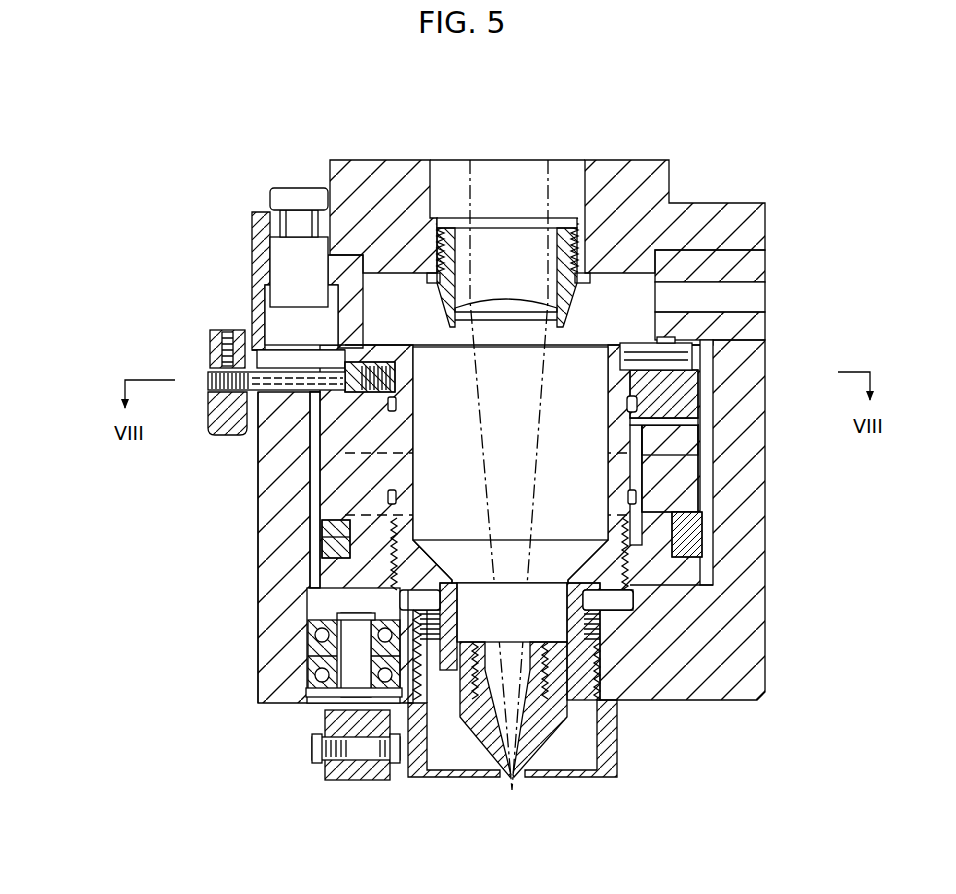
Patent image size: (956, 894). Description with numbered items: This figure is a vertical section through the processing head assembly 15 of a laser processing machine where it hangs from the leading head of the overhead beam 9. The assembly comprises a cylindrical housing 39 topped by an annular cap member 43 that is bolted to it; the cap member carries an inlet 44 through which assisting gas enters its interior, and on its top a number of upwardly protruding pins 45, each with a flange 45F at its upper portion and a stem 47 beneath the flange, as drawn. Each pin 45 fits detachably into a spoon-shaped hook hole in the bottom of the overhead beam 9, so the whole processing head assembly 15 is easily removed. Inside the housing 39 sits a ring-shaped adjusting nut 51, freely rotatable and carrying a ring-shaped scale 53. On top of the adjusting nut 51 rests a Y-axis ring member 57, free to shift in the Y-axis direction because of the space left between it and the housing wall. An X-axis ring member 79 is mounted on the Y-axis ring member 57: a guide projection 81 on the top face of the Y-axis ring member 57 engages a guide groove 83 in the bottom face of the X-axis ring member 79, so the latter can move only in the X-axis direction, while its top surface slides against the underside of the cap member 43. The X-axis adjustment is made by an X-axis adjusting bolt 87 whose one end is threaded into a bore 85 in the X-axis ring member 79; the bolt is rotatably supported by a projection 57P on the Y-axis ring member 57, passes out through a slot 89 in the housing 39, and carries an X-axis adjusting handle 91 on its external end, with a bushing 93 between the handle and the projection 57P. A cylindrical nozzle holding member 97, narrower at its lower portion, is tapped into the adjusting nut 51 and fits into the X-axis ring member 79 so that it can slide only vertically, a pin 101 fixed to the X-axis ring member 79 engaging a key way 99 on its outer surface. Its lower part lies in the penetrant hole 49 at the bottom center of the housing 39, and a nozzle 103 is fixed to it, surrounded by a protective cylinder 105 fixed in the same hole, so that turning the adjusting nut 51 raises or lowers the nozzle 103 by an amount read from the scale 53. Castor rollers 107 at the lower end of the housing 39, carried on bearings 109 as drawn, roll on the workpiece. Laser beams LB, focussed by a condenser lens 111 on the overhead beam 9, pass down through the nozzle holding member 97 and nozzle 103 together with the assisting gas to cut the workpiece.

The overhead beam 9 is at (634, 170).
The laser beams LB is at (552, 165).
The cap member 43 is at (753, 267).
The inlet 44 is at (757, 298).
The flange 45F is at (298, 195).
The plunger stem 47 is at (282, 222).
The pin 45 is at (288, 272).
The bushing 93 is at (292, 360).
The X-axis adjusting bolt 87 is at (362, 373).
The bore 85 is at (394, 375).
The X-axis adjusting handle 91 is at (220, 418).
The slot 89 is at (275, 398).
The projection 57P is at (328, 408).
The processing head assembly 15 is at (242, 510).
The housing 39 is at (275, 603).
The bearing 109 is at (307, 688).
The castor rollers 107 is at (314, 761).
The nozzle 103 is at (535, 760).
The nozzle cap 105 is at (615, 770).
The penetrant hole 49 is at (600, 637).
The nozzle holding member 97 is at (588, 577).
The adjusting nut 51 is at (680, 578).
The scale 53 is at (690, 533).
The Y-axis ring member 57 is at (683, 485).
The guide projection 81 is at (692, 440).
The guide groove 83 is at (693, 417).
The X-axis ring member 79 is at (687, 385).
The key way 99 is at (620, 380).
The pin 101 is at (628, 392).
The condenser lens 111 is at (528, 303).